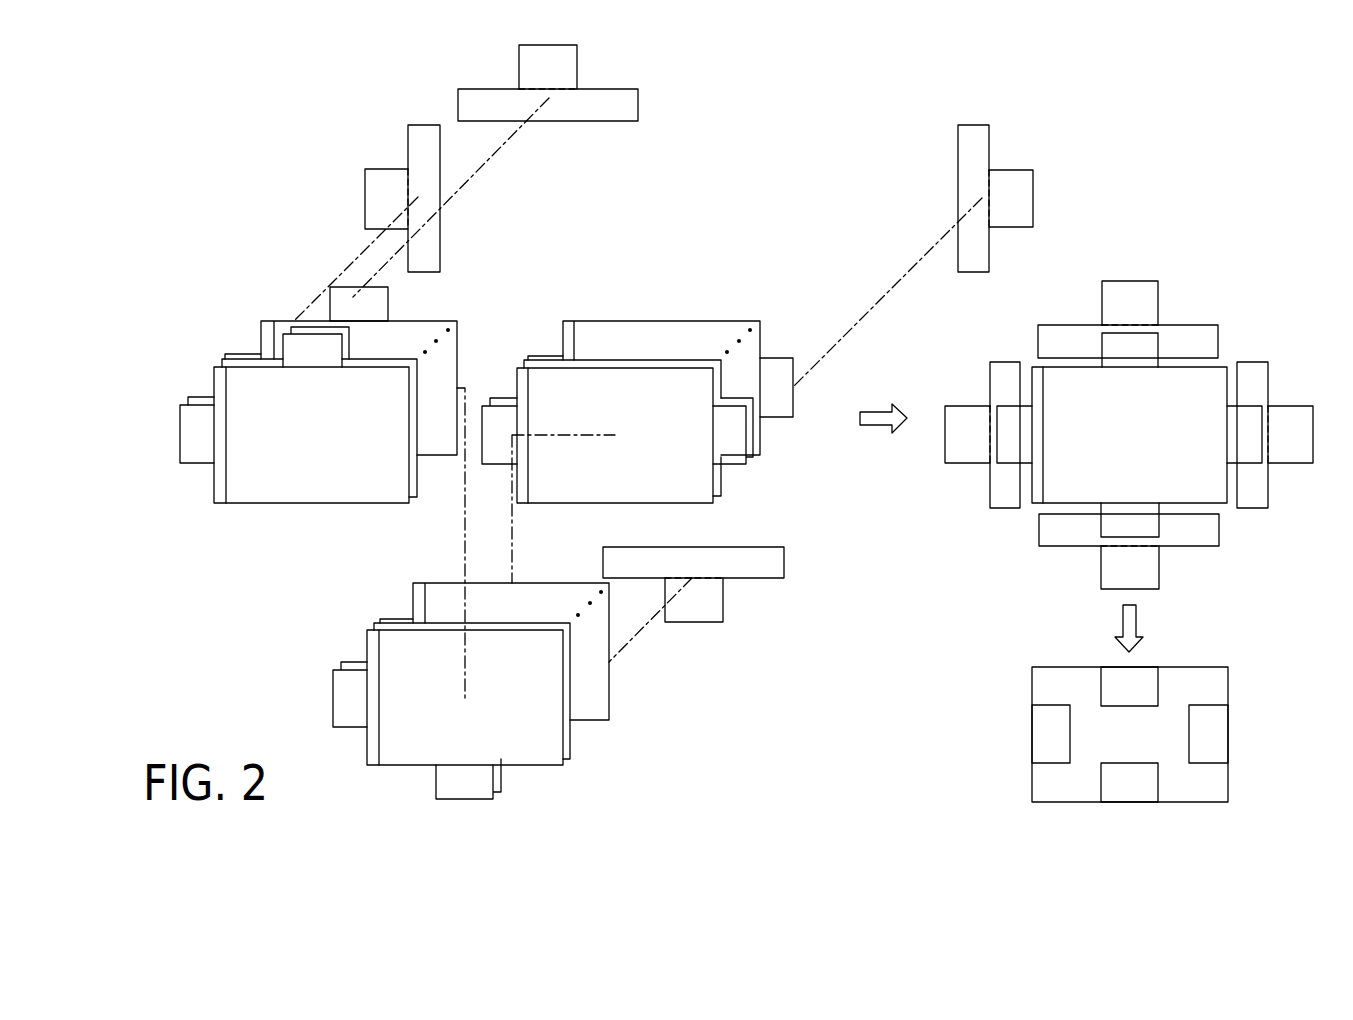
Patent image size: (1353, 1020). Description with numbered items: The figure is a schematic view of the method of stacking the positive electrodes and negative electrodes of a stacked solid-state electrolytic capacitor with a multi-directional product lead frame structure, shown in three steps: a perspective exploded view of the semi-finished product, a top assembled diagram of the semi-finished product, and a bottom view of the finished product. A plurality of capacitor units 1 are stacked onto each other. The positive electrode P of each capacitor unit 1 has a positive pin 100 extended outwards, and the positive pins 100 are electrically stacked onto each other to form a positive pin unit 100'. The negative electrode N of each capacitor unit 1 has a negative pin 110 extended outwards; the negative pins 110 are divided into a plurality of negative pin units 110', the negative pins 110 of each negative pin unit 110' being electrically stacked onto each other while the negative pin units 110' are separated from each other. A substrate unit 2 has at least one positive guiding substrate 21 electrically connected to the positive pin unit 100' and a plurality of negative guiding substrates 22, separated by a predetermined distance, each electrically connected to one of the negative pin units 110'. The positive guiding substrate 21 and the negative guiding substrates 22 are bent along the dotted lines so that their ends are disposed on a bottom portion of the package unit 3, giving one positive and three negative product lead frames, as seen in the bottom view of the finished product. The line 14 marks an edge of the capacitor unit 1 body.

The capacitor unit 1 is at (297, 503).
The cell casing edge 14 is at (220, 497).
The positive pin 100 is at (355, 480).
The positive pin unit 100' is at (577, 469).
The negative pin 110 is at (548, 497).
The negative pin unit 110' is at (786, 494).
The substrate unit 2 is at (363, 69).
The positive guiding substrate 21 is at (370, 169).
The negative guiding substrate 22 is at (580, 63).
The package unit 3 is at (1233, 679).
The positive electrode P is at (180, 460).
The negative electrode N is at (367, 482).